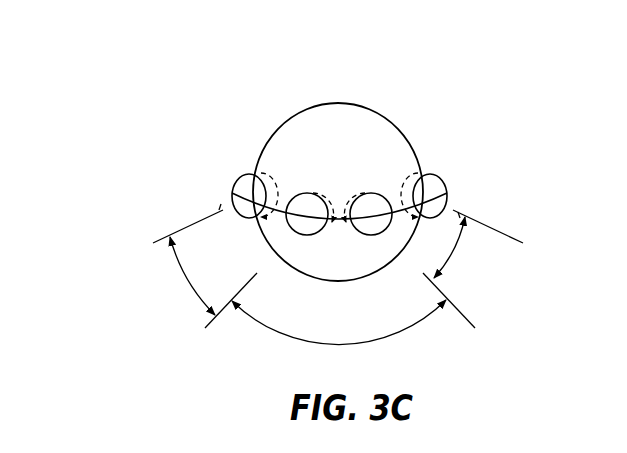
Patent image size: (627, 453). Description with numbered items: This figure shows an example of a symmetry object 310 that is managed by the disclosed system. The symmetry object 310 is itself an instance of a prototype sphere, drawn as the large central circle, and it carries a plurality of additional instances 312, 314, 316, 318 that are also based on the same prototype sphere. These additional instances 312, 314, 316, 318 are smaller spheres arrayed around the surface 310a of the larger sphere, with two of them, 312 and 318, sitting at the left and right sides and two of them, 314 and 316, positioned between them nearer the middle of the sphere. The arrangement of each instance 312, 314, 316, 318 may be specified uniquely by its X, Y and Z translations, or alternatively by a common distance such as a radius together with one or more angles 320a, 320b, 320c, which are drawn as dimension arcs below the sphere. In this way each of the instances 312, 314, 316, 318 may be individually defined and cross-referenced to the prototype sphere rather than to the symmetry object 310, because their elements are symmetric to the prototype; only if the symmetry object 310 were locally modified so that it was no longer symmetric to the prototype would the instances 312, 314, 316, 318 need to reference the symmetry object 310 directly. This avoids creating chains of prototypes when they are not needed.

The symmetry object 310 is at (382, 88).
The surface 310a is at (322, 140).
The additional instance 312 is at (230, 182).
The additional instance 314 is at (297, 167).
The additional instance 316 is at (373, 163).
The additional instance 318 is at (448, 177).
The angle 320a is at (163, 273).
The angle 320b is at (270, 332).
The angle 320c is at (467, 265).